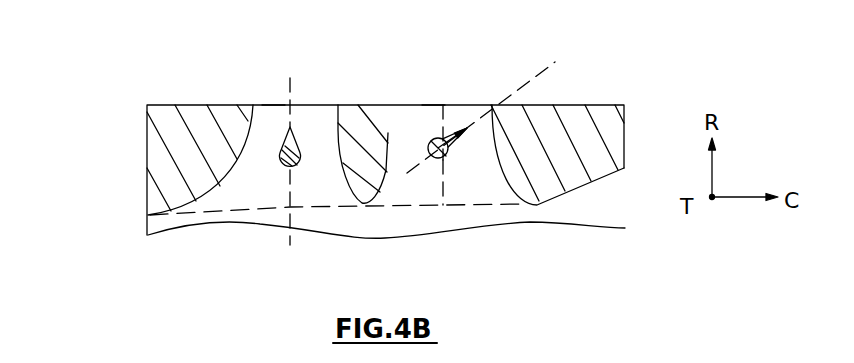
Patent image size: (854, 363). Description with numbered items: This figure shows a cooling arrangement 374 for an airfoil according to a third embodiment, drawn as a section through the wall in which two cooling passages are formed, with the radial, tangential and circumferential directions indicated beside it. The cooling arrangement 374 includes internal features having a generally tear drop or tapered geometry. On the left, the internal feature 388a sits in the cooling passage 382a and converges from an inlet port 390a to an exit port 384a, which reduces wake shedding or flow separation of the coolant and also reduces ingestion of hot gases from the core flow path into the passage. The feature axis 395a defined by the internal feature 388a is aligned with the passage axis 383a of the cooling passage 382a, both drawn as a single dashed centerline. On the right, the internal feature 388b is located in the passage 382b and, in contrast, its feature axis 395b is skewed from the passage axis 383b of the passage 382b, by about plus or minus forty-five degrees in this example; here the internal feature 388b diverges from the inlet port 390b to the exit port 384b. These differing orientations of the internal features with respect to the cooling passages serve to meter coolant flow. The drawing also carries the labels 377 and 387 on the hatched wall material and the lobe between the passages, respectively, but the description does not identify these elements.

The cooling arrangement 374 is at (150, 78).
The platform surface 377 is at (378, 222).
The cooling passage 382a is at (260, 118).
The passage 382b is at (402, 127).
The passage axis 383a is at (290, 105).
The passage axis 383b is at (445, 118).
The exit port 384a is at (273, 105).
The exit port 384b is at (433, 105).
The lobe 387 is at (385, 117).
The internal feature 388a is at (282, 168).
The internal feature 388b is at (458, 142).
The inlet port 390a is at (283, 207).
The inlet port 390b is at (445, 205).
The feature axis 395a is at (292, 187).
The feature axis 395b is at (543, 72).